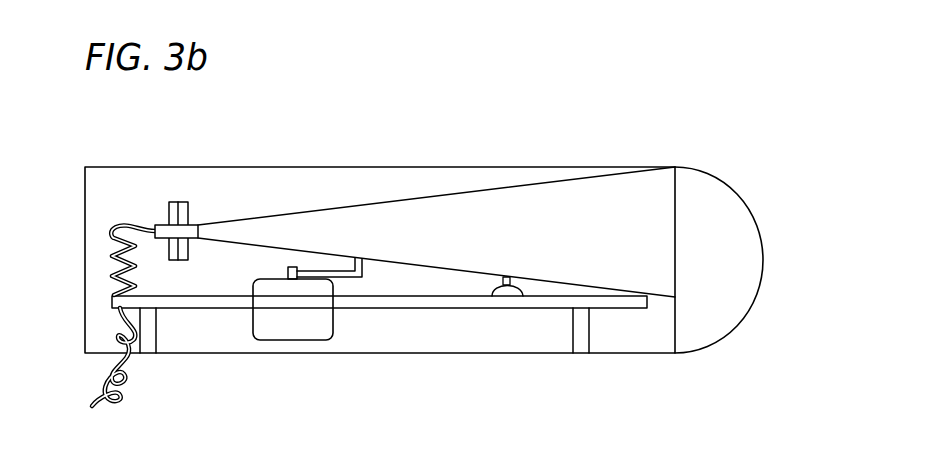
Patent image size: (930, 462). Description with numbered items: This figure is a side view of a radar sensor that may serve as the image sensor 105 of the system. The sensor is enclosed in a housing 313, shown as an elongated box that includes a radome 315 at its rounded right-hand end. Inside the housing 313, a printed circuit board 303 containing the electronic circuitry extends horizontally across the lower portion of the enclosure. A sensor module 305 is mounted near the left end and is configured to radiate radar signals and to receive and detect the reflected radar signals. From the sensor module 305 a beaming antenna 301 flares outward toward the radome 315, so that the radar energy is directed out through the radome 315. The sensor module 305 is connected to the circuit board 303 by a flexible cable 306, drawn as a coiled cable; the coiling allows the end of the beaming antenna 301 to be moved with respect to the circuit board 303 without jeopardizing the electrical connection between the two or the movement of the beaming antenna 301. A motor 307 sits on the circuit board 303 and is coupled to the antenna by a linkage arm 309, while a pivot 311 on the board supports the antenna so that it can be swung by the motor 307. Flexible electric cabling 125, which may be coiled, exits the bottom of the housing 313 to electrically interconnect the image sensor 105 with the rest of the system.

The image sensor 105 is at (645, 108).
The flexible electric cabling 125 is at (95, 380).
The beaming antenna 301 is at (437, 195).
The printed circuit board 303 is at (216, 308).
The sensor module 305 is at (180, 202).
The flexible cable 306 is at (113, 253).
The motor 307 is at (255, 320).
The linkage arm 309 is at (363, 270).
The pivot 311 is at (524, 292).
The housing 313 is at (520, 167).
The radome 315 is at (765, 260).